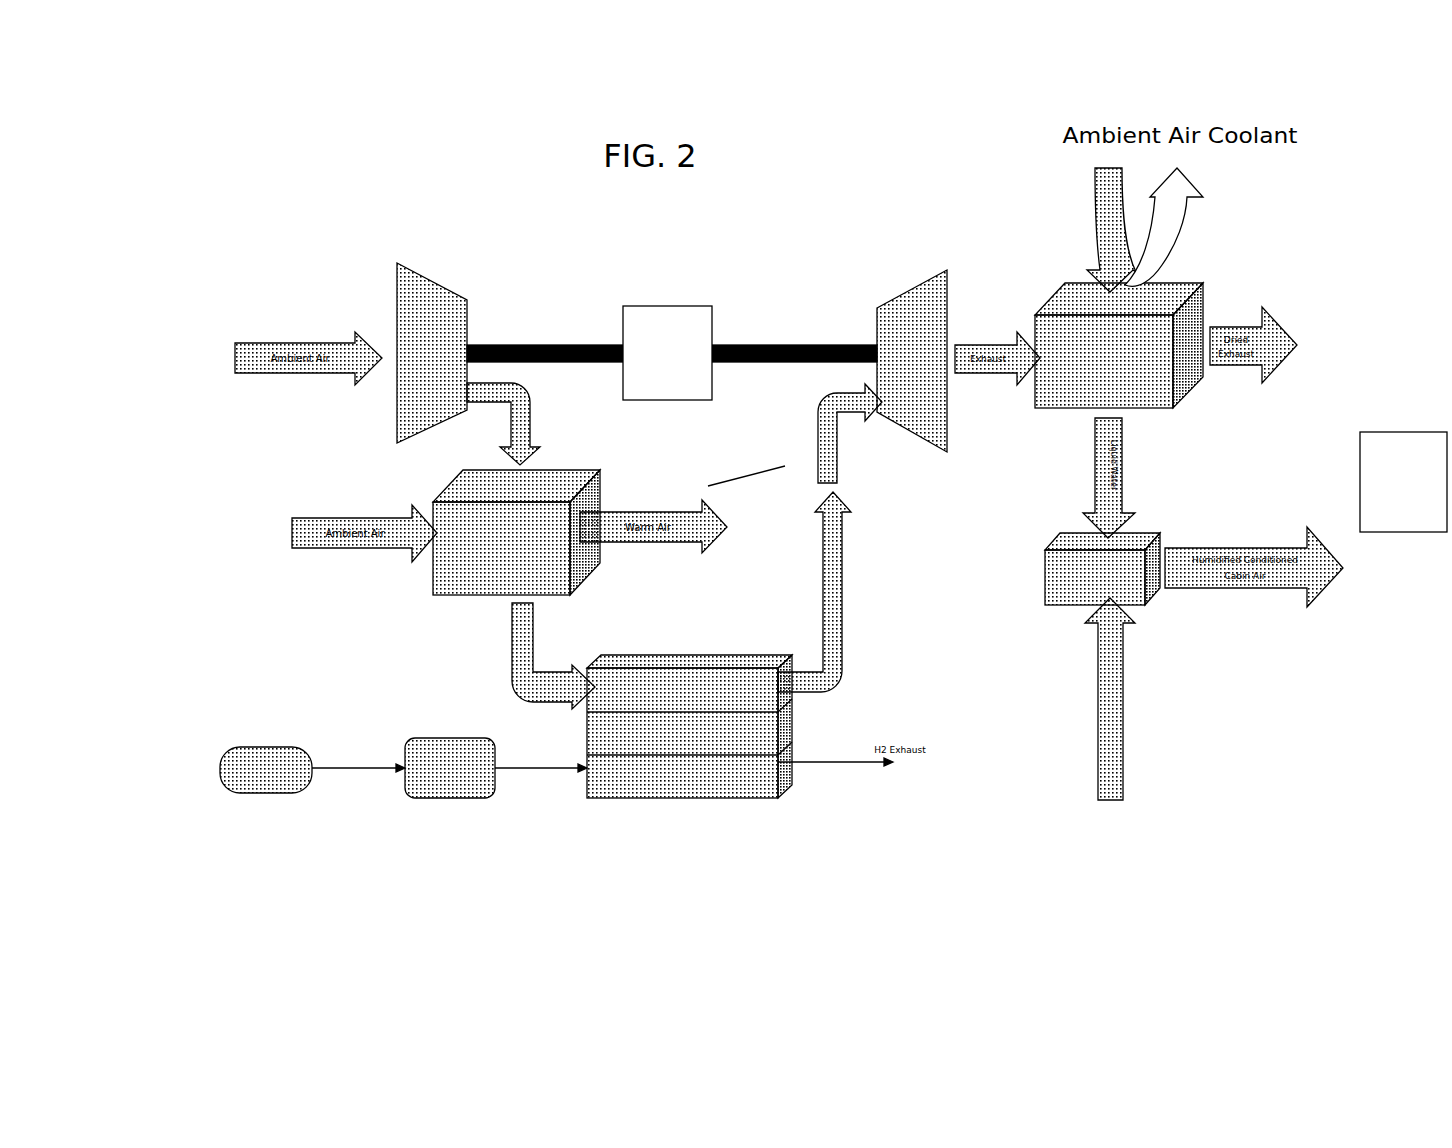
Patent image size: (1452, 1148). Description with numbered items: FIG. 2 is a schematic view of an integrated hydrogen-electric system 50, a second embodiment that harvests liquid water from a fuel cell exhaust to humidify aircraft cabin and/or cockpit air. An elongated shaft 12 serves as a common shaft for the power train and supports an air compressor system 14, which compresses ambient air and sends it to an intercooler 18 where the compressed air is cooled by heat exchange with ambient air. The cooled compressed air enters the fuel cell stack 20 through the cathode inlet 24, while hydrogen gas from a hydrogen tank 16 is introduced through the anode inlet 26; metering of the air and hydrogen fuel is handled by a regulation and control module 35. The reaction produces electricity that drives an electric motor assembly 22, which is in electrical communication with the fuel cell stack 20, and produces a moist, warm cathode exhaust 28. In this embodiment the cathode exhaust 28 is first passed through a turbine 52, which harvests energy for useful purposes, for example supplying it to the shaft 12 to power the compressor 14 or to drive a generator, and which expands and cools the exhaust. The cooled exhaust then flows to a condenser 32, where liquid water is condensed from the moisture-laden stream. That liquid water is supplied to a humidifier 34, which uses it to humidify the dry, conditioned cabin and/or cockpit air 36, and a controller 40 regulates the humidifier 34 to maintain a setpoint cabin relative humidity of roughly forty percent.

The elongated shaft 12 is at (508, 350).
The air compressor system 14 is at (420, 275).
The hydrogen tank 16 is at (290, 745).
The intercooler 18 is at (548, 497).
The fuel cell stack 20 is at (780, 729).
The electric motor assembly 22 is at (657, 313).
The cathode inlet 24 is at (537, 638).
The anode inlet 26 is at (517, 770).
The cathode exhaust 28 is at (845, 598).
The condenser 32 is at (1036, 316).
The humidifier 34 is at (1146, 530).
The regulation and control module 35 is at (442, 740).
The conditioned cabin and/or cockpit air 36 is at (1115, 660).
The controller 40 is at (1400, 430).
The integrated hydrogen-electric system 50 is at (238, 446).
The turbine 52 is at (882, 298).